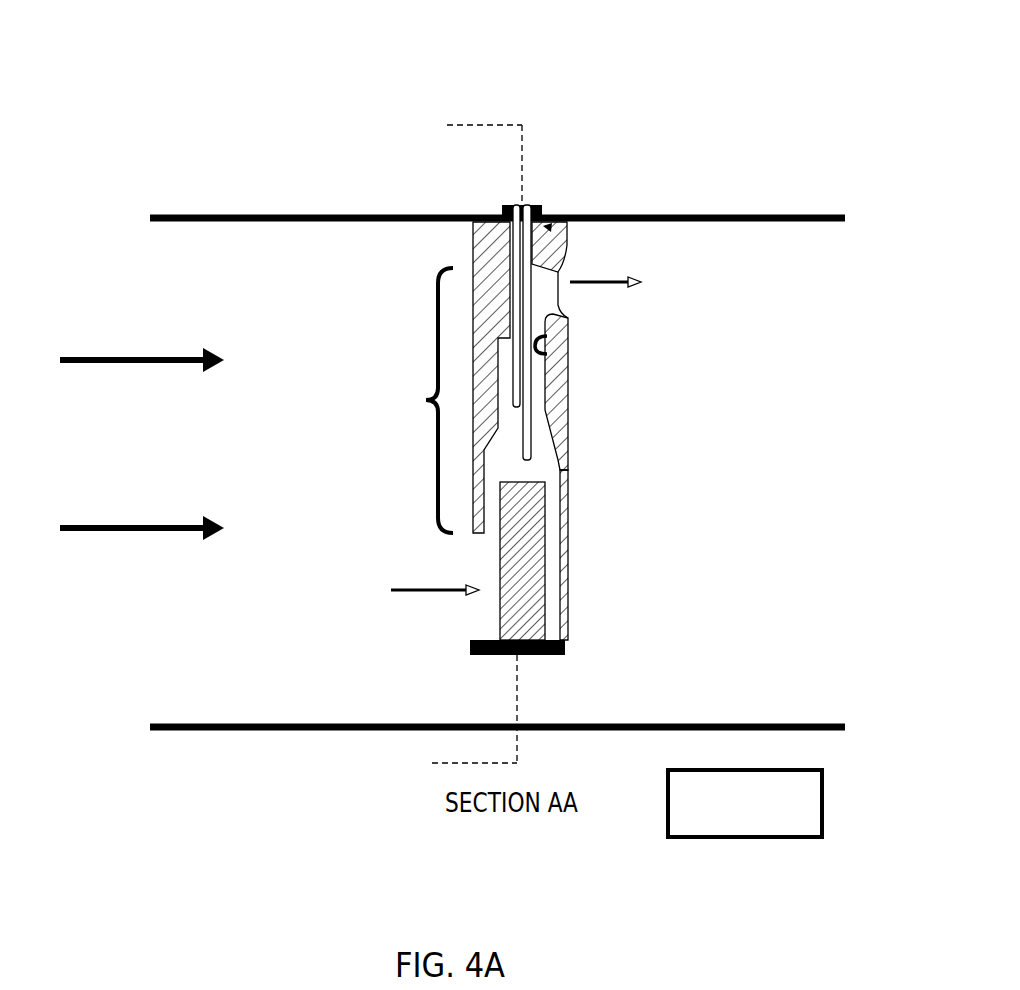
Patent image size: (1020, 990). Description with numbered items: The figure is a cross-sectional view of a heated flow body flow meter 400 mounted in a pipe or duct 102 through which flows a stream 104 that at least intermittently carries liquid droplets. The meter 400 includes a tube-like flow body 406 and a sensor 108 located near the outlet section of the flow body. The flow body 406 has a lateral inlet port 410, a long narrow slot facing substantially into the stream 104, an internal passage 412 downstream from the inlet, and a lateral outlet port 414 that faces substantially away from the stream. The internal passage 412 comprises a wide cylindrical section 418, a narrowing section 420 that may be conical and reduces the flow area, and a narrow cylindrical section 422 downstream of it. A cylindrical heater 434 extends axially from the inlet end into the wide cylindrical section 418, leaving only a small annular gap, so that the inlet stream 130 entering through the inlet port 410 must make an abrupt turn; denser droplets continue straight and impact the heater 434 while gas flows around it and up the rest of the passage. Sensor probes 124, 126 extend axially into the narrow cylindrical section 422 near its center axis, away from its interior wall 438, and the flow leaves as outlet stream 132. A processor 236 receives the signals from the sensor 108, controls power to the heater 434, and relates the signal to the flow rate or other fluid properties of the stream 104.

The duct 102 is at (240, 214).
The stream 104 is at (115, 355).
The sensor 108 is at (500, 206).
The sensor probe 124 is at (510, 347).
The sensor probe 126 is at (530, 388).
The inlet stream 130 is at (443, 592).
The outlet stream 132 is at (593, 281).
The processor 236 is at (683, 837).
The heated flow body flow meter 400 is at (368, 558).
The flow body 406 is at (551, 227).
The inlet port 410 is at (462, 620).
The internal passage 412 is at (426, 400).
The outlet port 414 is at (576, 259).
The wide cylindrical section 418 is at (558, 476).
The narrowing section 420 is at (488, 449).
The narrow cylindrical section 422 is at (540, 422).
The cylindrical heater 434 is at (528, 568).
The interior wall 438 is at (547, 353).